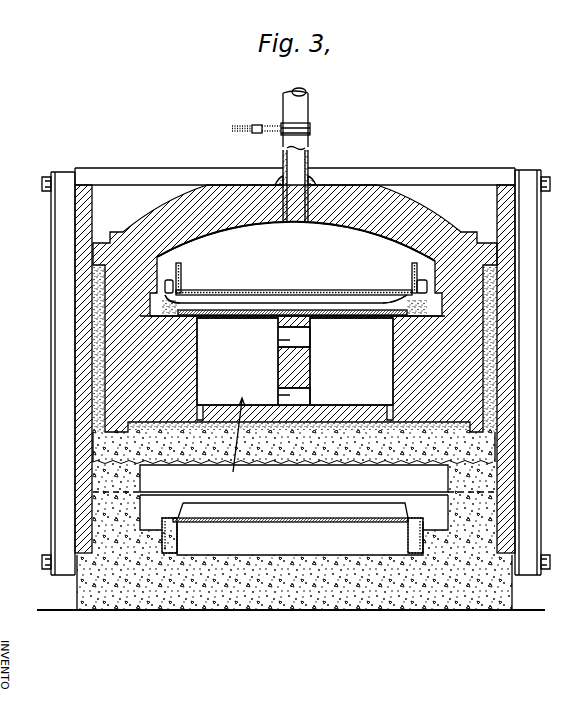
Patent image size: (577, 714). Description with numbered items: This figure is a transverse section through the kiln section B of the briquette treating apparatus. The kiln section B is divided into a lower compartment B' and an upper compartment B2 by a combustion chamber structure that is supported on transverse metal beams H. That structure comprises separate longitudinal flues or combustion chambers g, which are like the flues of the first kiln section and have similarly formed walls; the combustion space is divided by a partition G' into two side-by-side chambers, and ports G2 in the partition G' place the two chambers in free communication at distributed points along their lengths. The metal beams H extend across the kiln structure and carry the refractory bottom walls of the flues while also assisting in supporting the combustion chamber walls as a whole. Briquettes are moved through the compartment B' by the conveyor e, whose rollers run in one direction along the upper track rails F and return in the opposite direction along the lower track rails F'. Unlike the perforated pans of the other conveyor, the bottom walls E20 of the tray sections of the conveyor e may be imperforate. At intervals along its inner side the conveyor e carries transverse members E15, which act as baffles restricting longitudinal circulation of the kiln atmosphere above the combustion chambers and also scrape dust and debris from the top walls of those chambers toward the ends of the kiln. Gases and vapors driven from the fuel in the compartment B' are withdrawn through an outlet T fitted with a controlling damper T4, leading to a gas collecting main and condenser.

The outlet T is at (308, 104).
The controlling damper T4 is at (310, 124).
The kiln section B is at (295, 348).
The lower compartment B' is at (296, 241).
The upper track rails F is at (296, 271).
The transverse members E15 is at (243, 297).
The bottom walls E20 is at (230, 537).
The conveyor e is at (350, 286).
The longitudinal flues or combustion chambers g is at (295, 361).
The ports G2 is at (278, 393).
The partition G' is at (314, 366).
The metal beams H is at (294, 497).
The lower track rails F' is at (292, 537).
The upper compartment B2 is at (298, 530).